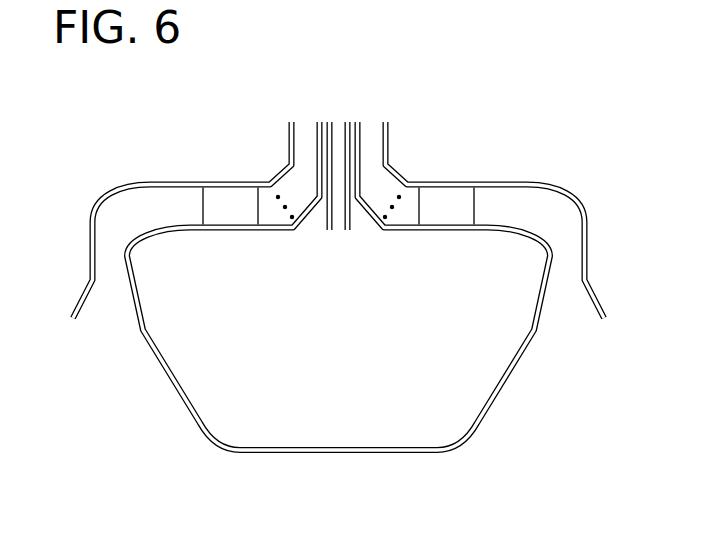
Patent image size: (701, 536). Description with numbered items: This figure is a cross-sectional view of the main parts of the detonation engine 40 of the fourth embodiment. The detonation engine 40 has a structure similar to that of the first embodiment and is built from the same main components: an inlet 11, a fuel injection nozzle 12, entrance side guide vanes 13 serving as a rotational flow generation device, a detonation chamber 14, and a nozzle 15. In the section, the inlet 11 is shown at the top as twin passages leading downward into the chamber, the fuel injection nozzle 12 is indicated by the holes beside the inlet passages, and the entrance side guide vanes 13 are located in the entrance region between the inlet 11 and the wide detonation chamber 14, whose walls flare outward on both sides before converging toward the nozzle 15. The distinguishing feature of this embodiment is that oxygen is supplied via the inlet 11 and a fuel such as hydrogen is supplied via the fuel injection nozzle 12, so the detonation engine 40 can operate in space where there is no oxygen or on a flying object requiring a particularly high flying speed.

The inlet 11 is at (302, 130).
The fuel injection nozzle 12 is at (271, 226).
The entrance side guide vanes 13 is at (232, 207).
The detonation chamber 14 is at (148, 212).
The nozzle 15 is at (107, 307).
The detonation engine 40 is at (518, 136).